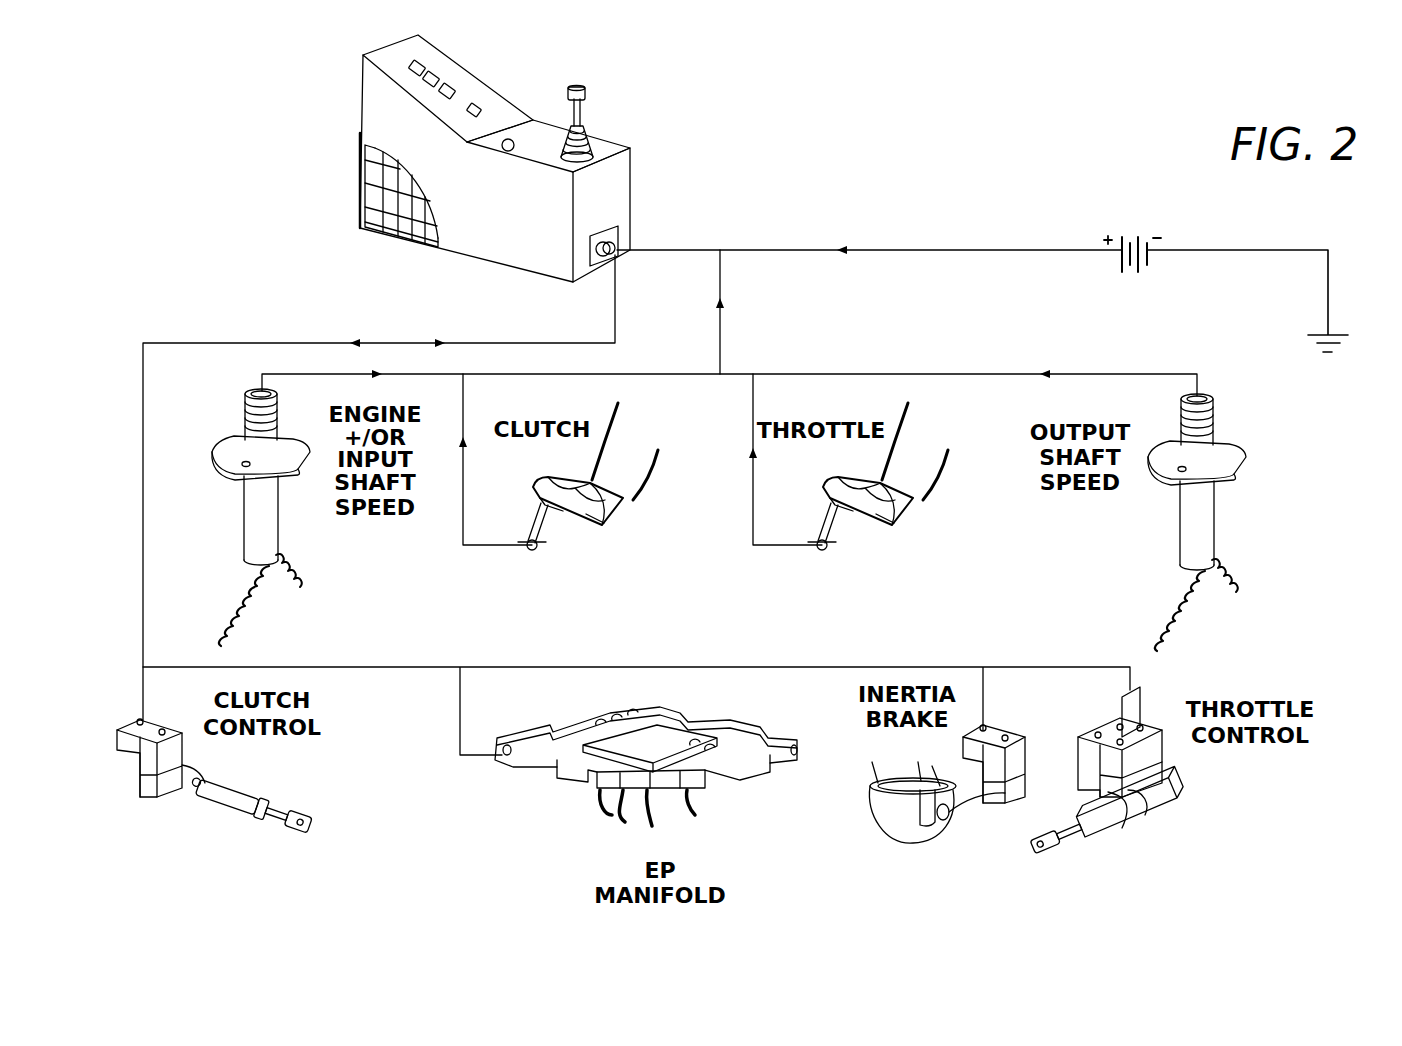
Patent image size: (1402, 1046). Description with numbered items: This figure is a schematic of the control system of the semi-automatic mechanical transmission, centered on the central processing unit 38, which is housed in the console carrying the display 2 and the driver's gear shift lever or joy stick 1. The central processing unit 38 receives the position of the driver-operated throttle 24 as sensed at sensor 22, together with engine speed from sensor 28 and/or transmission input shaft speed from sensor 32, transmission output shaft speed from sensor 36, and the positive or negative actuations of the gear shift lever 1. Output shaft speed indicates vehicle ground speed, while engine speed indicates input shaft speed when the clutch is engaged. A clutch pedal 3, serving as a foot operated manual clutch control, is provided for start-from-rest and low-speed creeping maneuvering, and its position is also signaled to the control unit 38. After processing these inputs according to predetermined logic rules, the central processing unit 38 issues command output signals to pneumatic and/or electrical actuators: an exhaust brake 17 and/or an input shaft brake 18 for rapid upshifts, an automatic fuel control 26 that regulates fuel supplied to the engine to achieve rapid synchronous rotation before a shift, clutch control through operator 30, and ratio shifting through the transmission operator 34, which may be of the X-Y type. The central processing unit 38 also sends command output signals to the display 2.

The gear shift lever 1 is at (585, 93).
The display 2 is at (498, 161).
The clutch pedal 3 is at (596, 558).
The exhaust brake 17 is at (1011, 698).
The input shaft brake 18 is at (985, 735).
The sensor 22 is at (863, 545).
The throttle 24 is at (885, 500).
The automatic fuel control 26 is at (1210, 769).
The sensor 28 is at (239, 507).
The operator 30 is at (282, 778).
The sensor 32 is at (239, 507).
The transmission operator 34 is at (752, 712).
The sensor 36 is at (1148, 550).
The central processing unit 38 is at (493, 226).